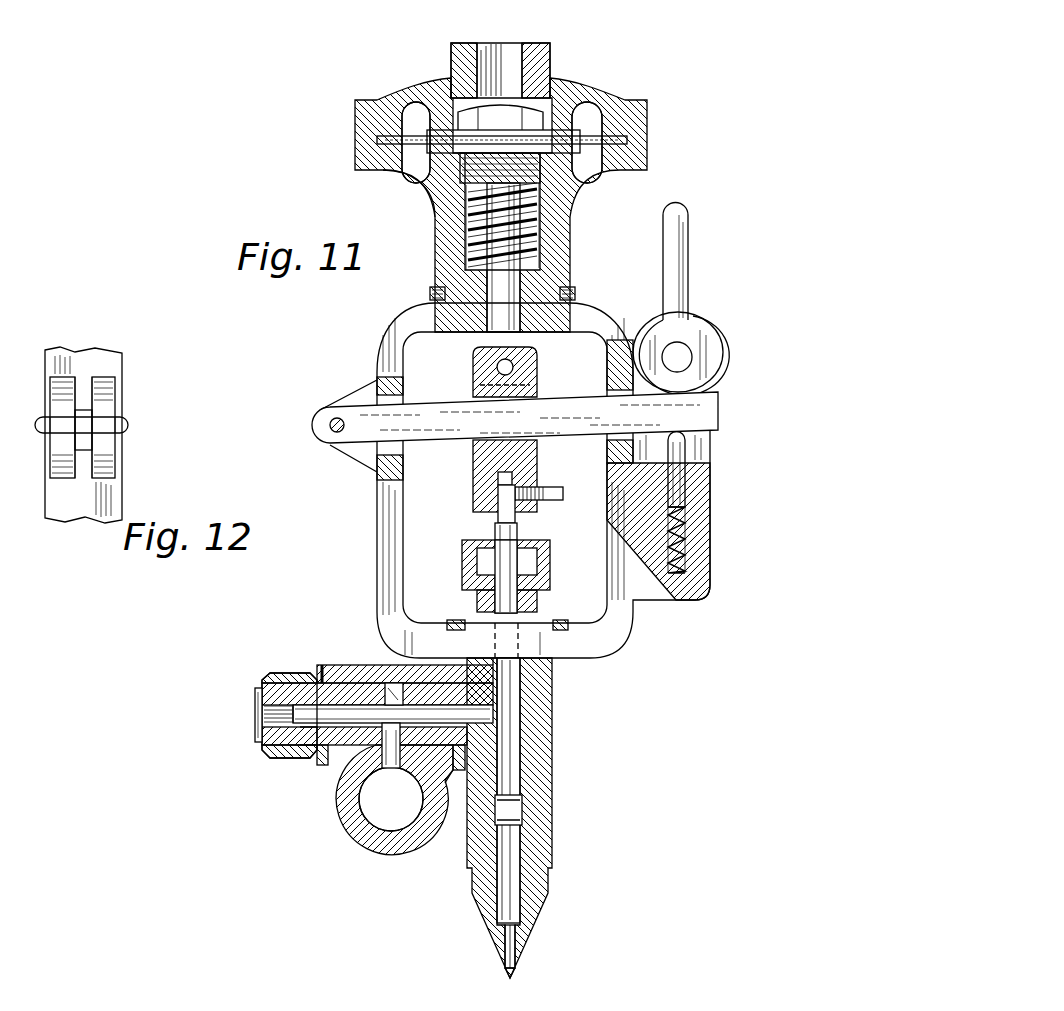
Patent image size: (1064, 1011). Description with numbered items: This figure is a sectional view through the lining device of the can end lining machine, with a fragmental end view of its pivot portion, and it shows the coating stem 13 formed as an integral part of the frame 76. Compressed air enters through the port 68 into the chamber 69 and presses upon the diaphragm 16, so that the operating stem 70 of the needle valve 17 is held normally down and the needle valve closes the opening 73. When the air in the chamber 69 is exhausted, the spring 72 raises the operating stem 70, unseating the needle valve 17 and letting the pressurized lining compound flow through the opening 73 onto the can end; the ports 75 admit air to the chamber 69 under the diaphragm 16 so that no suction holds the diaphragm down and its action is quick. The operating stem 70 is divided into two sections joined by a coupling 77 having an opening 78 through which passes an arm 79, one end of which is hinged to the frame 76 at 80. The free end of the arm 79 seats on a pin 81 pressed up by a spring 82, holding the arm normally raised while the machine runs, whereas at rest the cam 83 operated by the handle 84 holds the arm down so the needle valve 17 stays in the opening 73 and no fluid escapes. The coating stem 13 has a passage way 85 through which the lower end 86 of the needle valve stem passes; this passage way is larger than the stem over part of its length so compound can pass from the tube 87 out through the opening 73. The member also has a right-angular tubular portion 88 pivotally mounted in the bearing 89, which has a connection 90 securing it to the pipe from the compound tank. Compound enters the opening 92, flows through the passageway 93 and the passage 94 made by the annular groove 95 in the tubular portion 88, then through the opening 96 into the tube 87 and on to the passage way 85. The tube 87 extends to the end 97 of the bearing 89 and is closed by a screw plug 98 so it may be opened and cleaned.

In FIG. 11, the coating stem 13 is at (540, 843).
In FIG. 11, the diaphragm 16 is at (630, 148).
In FIG. 11, the needle valve 17 is at (517, 943).
In FIG. 11, the port 68 is at (505, 80).
In FIG. 11, the chamber 69 is at (588, 110).
In FIG. 11, the operating stem 70 is at (502, 290).
In FIG. 11, the spring 72 is at (465, 232).
In FIG. 11, the opening 73 is at (510, 978).
In FIG. 11, the ports 75 is at (400, 188).
In FIG. 11, the frame 76 is at (377, 513).
In FIG. 12, the frame 76 is at (52, 360).
In FIG. 11, the coupling 77 is at (473, 455).
In FIG. 11, the opening 78 is at (540, 445).
In FIG. 11, the arm 79 is at (545, 400).
In FIG. 12, the arm 79 is at (80, 440).
In FIG. 11, the hinge 80 is at (320, 418).
In FIG. 12, the hinge 80 is at (128, 428).
In FIG. 11, the pin 81 is at (678, 458).
In FIG. 11, the spring 82 is at (690, 557).
In FIG. 11, the cam 83 is at (725, 347).
In FIG. 11, the handle 84 is at (678, 273).
In FIG. 11, the passage way 85 is at (545, 808).
In FIG. 11, the lower end of needle valve stem 86 is at (510, 718).
In FIG. 11, the tube 87 is at (453, 776).
In FIG. 11, the right-angular tubular portion 88 is at (328, 690).
In FIG. 11, the bearing 89 is at (352, 668).
In FIG. 11, the connection 90 is at (390, 855).
In FIG. 11, the opening 92 is at (392, 768).
In FIG. 11, the passageway 93 is at (312, 746).
In FIG. 11, the passage 94 is at (413, 772).
In FIG. 11, the annular groove 95 is at (404, 686).
In FIG. 11, the opening 96 is at (323, 766).
In FIG. 11, the end 97 is at (255, 735).
In FIG. 11, the screw plug 98 is at (255, 712).